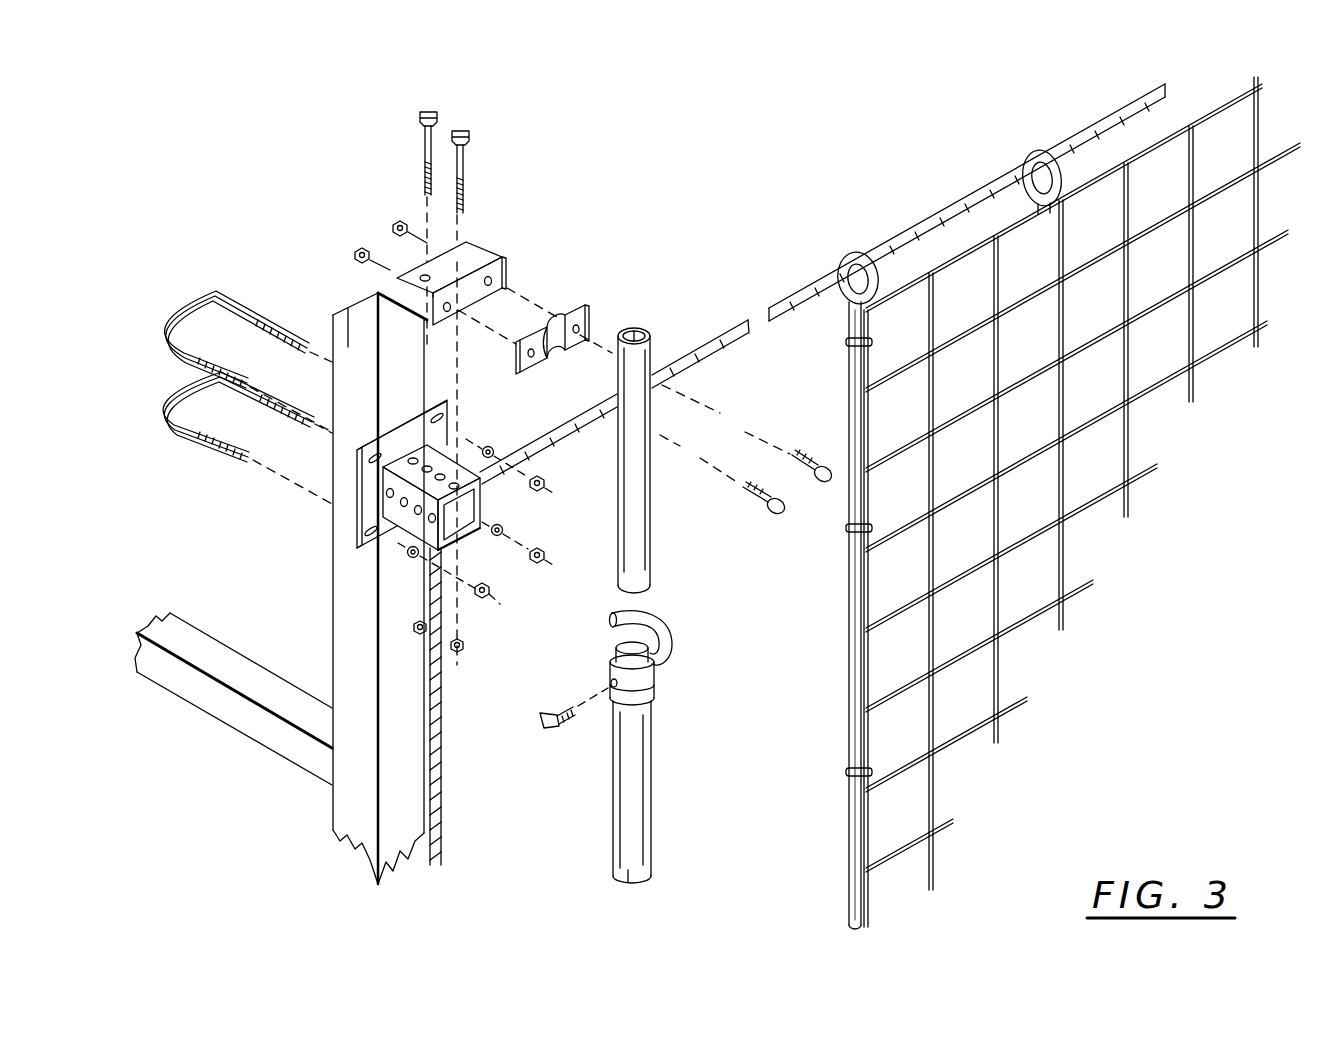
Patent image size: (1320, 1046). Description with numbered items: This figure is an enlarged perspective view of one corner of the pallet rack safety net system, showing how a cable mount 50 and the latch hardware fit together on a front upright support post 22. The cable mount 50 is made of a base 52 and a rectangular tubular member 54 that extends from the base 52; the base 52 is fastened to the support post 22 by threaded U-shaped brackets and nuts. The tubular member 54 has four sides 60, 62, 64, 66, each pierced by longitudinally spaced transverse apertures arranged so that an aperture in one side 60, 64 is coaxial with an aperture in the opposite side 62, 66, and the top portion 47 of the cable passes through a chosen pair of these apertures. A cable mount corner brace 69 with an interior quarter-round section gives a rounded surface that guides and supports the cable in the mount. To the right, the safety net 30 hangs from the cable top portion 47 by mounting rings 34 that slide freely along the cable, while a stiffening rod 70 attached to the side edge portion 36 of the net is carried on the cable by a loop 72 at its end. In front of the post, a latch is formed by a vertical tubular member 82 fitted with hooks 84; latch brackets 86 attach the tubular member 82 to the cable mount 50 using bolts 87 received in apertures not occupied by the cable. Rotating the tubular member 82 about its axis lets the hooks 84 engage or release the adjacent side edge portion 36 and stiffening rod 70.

The front upright support post 22 is at (337, 643).
The safety net 30 is at (1067, 550).
The mounting ring 34 is at (1034, 150).
The side edge portion 36 is at (881, 753).
The top portion of the cable 47 is at (822, 288).
The cable mount 50 is at (292, 542).
The base 52 is at (357, 470).
The rectangular tubular member 54 is at (425, 452).
The side of tubular member 60 is at (463, 470).
The side of tubular member 62 is at (463, 528).
The side of tubular member 64 is at (417, 524).
The side of tubular member 66 is at (484, 492).
The cable mount corner brace 69 is at (474, 502).
The stiffening rod 70 is at (848, 902).
The loop 72 is at (845, 255).
The vertical tubular member 82 is at (612, 815).
The hook 84 is at (673, 650).
The latch bracket 86 is at (558, 258).
The bolt 87 is at (465, 129).